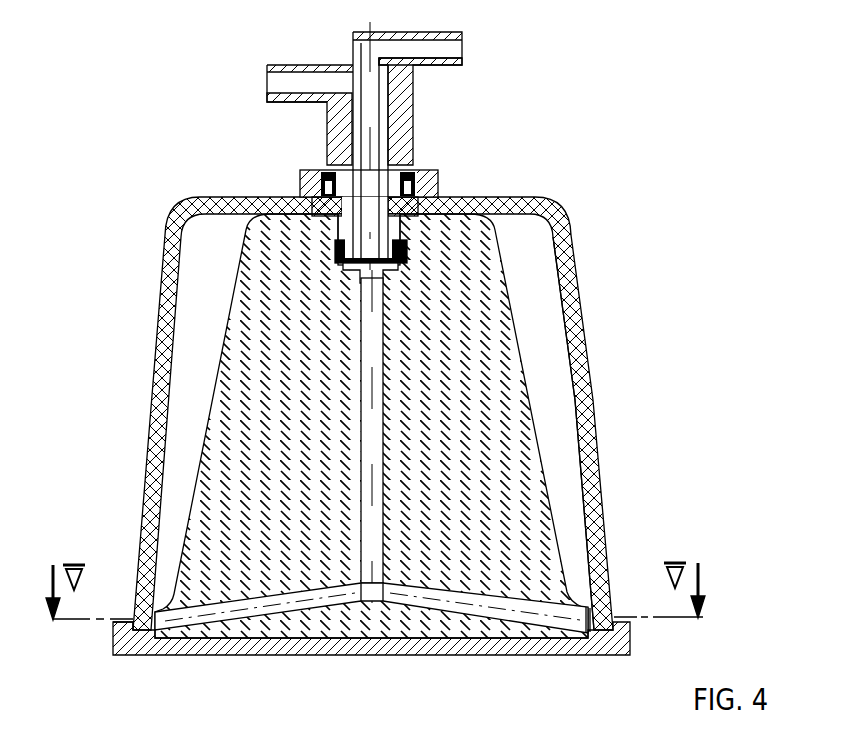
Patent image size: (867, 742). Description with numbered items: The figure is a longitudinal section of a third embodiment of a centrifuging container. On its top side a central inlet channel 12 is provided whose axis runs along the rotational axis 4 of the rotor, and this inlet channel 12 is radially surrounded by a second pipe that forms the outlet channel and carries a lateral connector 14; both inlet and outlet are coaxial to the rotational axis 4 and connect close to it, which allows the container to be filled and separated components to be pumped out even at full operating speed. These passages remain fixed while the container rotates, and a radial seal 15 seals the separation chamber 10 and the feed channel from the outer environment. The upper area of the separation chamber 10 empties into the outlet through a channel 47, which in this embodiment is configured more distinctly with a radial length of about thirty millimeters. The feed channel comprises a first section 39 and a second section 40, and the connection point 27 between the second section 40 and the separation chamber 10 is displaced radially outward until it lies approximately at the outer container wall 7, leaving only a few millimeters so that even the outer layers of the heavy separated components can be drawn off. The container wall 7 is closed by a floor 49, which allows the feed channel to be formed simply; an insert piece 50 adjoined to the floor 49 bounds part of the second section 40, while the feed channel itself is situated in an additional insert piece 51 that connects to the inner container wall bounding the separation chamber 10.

The rotational axis 4 is at (363, 50).
The outer container wall 7 is at (585, 364).
The separation chamber 10 is at (542, 305).
The inlet channel 12 is at (368, 93).
The lateral connector 14 is at (323, 91).
The radial seal 15 is at (408, 255).
The connection point 27 is at (582, 612).
The first section 39 is at (381, 482).
The second section 40 is at (243, 608).
The channel 47 is at (450, 213).
The floor 49 is at (130, 647).
The insert piece 50 is at (305, 640).
The insert piece 51 is at (500, 401).